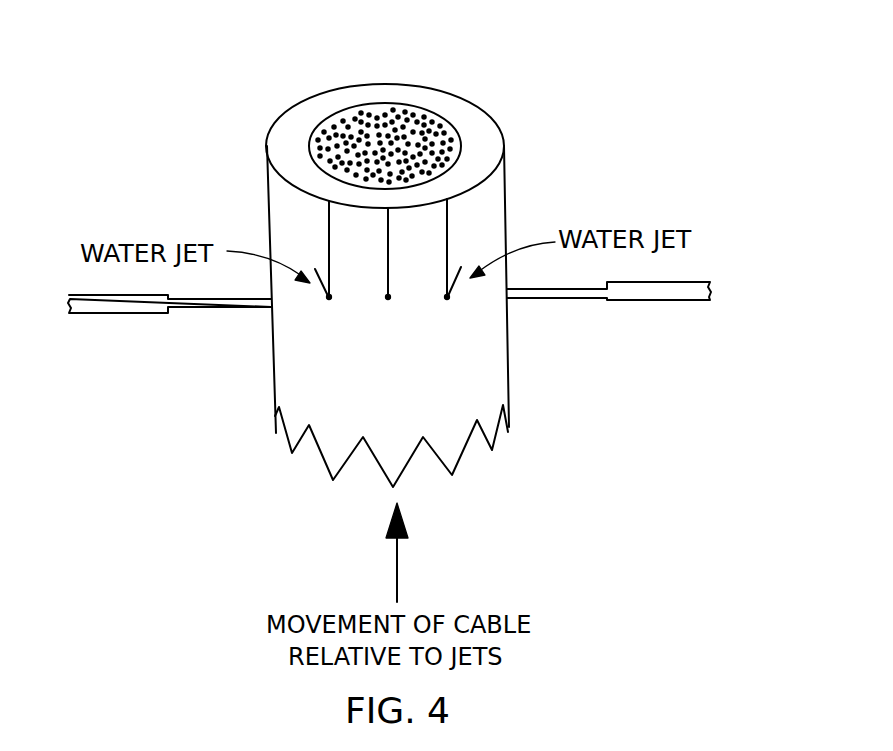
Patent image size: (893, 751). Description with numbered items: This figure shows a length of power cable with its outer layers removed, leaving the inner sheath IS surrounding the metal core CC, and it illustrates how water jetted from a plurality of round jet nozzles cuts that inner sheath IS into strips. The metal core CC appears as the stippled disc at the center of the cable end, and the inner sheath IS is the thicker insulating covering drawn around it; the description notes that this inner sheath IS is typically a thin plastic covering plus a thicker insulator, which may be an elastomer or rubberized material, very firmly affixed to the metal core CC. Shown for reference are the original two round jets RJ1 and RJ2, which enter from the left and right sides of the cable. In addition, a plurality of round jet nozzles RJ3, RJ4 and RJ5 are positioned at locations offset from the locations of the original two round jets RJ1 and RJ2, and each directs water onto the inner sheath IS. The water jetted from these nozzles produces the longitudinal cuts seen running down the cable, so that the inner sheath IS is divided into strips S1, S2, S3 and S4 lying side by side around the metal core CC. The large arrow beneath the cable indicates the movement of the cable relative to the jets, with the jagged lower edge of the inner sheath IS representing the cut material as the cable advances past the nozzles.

The metal core CC is at (352, 104).
The inner sheath IS is at (405, 412).
The strip S1 is at (315, 247).
The strip S2 is at (373, 255).
The strip S3 is at (432, 253).
The strip S4 is at (490, 242).
The round jet RJ1 is at (116, 334).
The round jet RJ2 is at (661, 318).
The round jet nozzle RJ3 is at (316, 316).
The round jet nozzle RJ4 is at (404, 332).
The round jet nozzle RJ5 is at (462, 316).